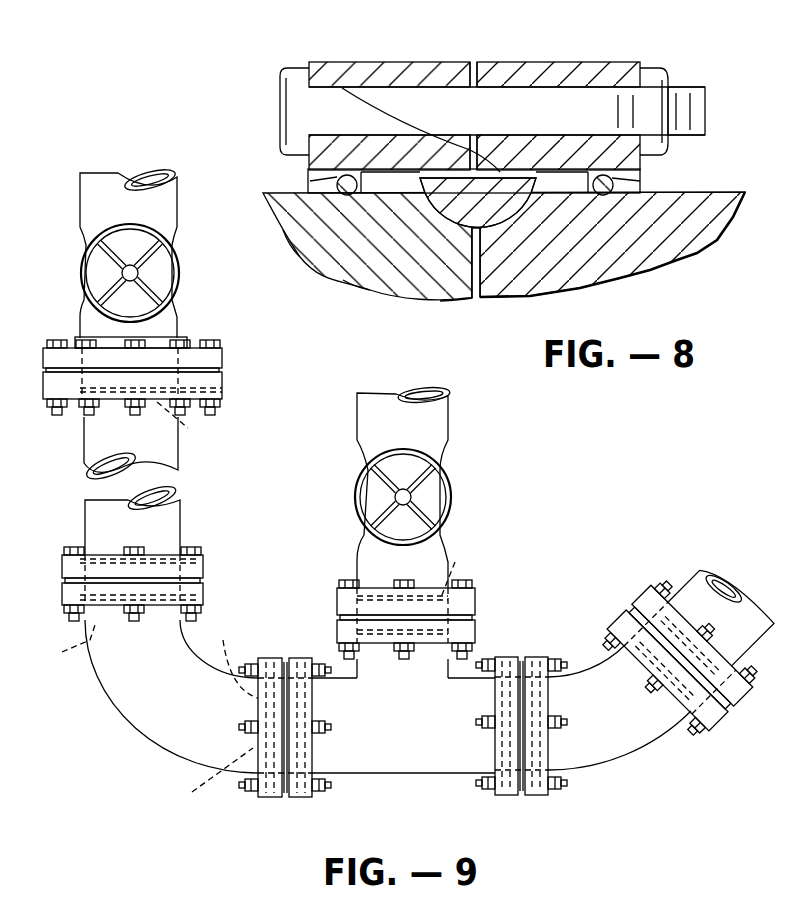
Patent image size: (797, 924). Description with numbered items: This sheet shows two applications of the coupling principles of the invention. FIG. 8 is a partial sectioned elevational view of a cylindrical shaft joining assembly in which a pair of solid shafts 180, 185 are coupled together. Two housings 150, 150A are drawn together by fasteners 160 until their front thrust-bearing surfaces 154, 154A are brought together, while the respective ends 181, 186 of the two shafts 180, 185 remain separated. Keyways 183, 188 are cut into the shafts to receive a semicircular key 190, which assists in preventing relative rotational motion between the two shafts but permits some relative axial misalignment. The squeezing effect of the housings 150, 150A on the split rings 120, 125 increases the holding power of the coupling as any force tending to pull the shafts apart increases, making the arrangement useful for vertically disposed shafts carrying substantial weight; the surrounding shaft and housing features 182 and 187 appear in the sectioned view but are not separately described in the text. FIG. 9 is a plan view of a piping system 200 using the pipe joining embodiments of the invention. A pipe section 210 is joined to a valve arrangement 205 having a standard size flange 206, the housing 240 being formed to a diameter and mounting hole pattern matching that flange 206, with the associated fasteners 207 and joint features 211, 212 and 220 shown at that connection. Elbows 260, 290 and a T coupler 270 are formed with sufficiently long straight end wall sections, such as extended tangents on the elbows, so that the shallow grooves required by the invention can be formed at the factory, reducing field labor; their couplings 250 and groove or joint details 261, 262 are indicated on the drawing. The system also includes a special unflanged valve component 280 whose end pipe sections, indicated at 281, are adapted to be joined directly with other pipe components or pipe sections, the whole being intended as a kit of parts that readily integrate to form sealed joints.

In FIG. 8, the split ring 120 is at (642, 176).
In FIG. 8, the split ring 125 is at (302, 168).
In FIG. 8, the housing 150 is at (573, 54).
In FIG. 8, the housing 150A is at (403, 54).
In FIG. 8, the front thrust-bearing surface 154 is at (441, 135).
In FIG. 8, the front thrust-bearing surface 154A is at (342, 88).
In FIG. 8, the fastener 160 is at (674, 57).
In FIG. 8, the solid shaft 180 is at (700, 192).
In FIG. 8, the end of shaft 181 is at (482, 300).
In FIG. 8, the curved surface 182 is at (684, 257).
In FIG. 8, the keyway 183 is at (522, 292).
In FIG. 8, the solid shaft 185 is at (283, 193).
In FIG. 8, the end of shaft 186 is at (467, 299).
In FIG. 8, the body lobe 187 is at (297, 247).
In FIG. 8, the keyway 188 is at (370, 290).
In FIG. 8, the semicircular key 190 is at (489, 175).
In FIG. 9, the piping assembly 200 is at (410, 824).
In FIG. 9, the valve arrangement 205 is at (165, 208).
In FIG. 9, the flange 206 is at (220, 355).
In FIG. 9, the nut 207 is at (206, 338).
In FIG. 9, the pipe section 210 is at (168, 455).
In FIG. 9, the hidden joint 211 is at (195, 423).
In FIG. 9, the pipe 212 is at (148, 557).
In FIG. 9, the gasket 220 is at (222, 397).
In FIG. 9, the housing 240 is at (215, 380).
In FIG. 9, the flange 250 is at (205, 560).
In FIG. 9, the elbow 260 is at (133, 715).
In FIG. 9, the hidden line 261 is at (60, 645).
In FIG. 9, the hidden line 262 is at (202, 775).
In FIG. 9, the T coupler 270 is at (392, 773).
In FIG. 9, the valve component 280 is at (438, 427).
In FIG. 9, the hidden line 281 is at (457, 562).
In FIG. 9, the elbow 290 is at (610, 750).